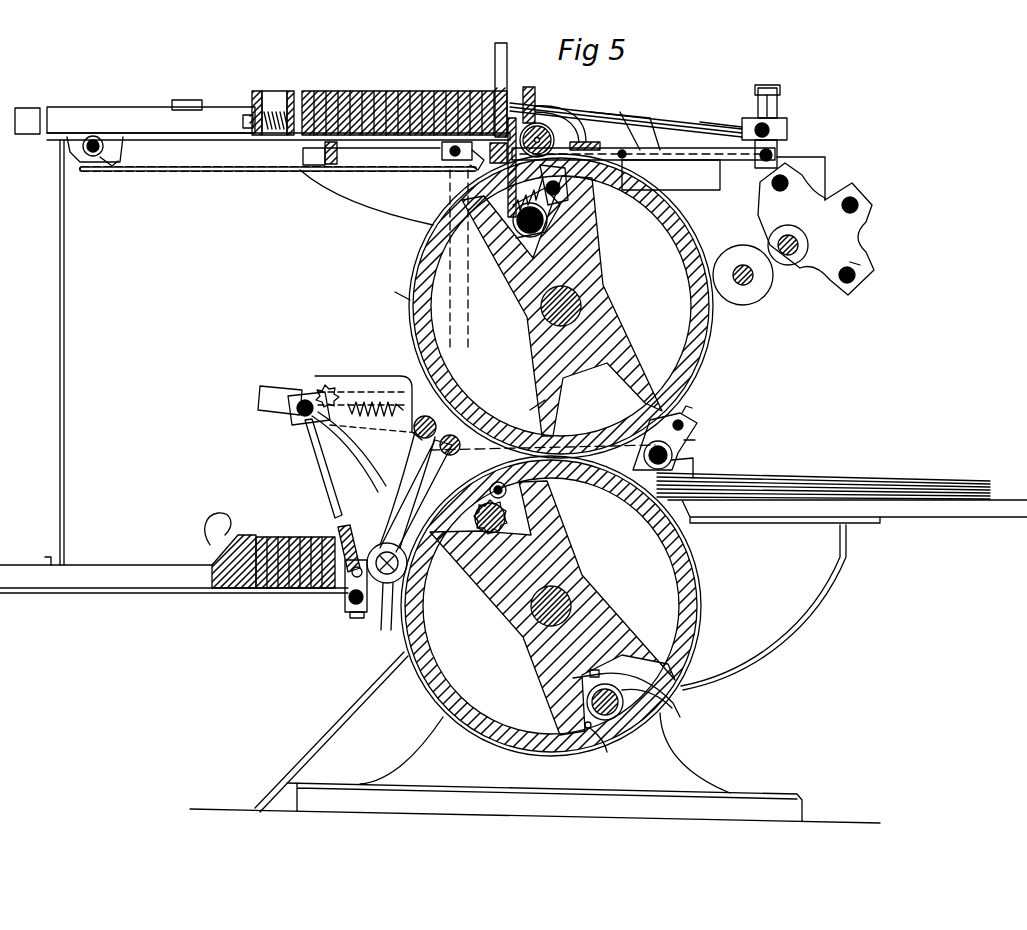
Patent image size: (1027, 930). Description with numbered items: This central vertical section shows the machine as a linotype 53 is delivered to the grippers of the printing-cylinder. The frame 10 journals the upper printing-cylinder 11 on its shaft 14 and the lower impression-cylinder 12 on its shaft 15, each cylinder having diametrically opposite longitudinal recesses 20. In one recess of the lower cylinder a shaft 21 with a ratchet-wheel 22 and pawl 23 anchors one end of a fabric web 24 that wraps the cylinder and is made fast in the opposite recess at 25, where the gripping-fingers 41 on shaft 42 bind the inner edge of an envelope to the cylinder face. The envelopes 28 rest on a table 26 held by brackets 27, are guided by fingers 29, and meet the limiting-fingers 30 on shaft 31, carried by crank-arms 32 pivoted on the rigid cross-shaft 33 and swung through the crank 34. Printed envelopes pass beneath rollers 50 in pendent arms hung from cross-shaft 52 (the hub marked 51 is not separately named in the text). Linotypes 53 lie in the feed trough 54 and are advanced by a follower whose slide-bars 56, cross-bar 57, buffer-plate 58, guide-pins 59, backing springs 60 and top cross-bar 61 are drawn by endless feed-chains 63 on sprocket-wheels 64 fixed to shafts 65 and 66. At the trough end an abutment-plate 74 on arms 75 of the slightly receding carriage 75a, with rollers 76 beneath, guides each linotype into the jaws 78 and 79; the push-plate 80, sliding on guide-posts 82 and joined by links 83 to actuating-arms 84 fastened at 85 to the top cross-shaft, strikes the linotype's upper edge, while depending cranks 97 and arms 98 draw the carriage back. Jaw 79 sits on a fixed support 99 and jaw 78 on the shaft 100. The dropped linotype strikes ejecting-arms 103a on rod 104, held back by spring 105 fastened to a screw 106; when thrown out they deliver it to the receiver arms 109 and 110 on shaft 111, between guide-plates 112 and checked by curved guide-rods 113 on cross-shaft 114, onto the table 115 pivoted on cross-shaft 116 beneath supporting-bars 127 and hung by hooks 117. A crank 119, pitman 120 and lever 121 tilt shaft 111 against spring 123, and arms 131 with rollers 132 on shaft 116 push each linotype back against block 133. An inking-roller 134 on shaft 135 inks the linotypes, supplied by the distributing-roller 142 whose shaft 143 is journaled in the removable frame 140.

The frame 10 is at (682, 745).
The printing-cylinder 11 is at (558, 455).
The impression-cylinder 12 is at (557, 456).
The shaft 14 is at (605, 300).
The shaft 15 is at (580, 576).
The longitudinal recesses 20 is at (595, 236).
The shaft 21 is at (470, 573).
The ratchet-wheel 22 is at (476, 512).
The pawl 23 is at (495, 482).
The web 24 is at (430, 500).
The web fastening 25 is at (606, 752).
The table 26 is at (935, 517).
The brackets 27 is at (806, 618).
The envelopes or other material 28 is at (823, 476).
The fingers 29 is at (660, 497).
The limiting-fingers 30 is at (672, 455).
The shaft 31 is at (684, 426).
The crank-arms 32 is at (700, 440).
The cross-shaft 33 is at (695, 468).
The crank 34 is at (690, 408).
The gripping-fingers 41 is at (648, 680).
The shaft 42 is at (612, 718).
The rollers 50 is at (381, 609).
The hub 51 is at (400, 545).
The cross-shaft 52 is at (524, 404).
The linotypes 53 is at (365, 92).
The feed trough or table 54 is at (147, 110).
The slide-bars 56 is at (184, 120).
The cross-bar 57 is at (258, 91).
The buffer-plate 58 is at (297, 92).
The guide-pins 59 is at (245, 118).
The springs 60 is at (277, 112).
The top cross-bar 61 is at (185, 101).
The feed-chains 63 is at (172, 171).
The sprocket-wheels 64 is at (108, 162).
The shaft 65 is at (92, 160).
The shaft 66 is at (450, 162).
The abutment-plate 74 is at (540, 106).
The arms 75 is at (596, 112).
The carriage 75a is at (654, 118).
The rollers 76 is at (628, 113).
The printing-jaw 78 is at (465, 260).
The printing-jaw 79 is at (612, 152).
The push-plate 80 is at (529, 88).
The guide-posts 82 is at (495, 64).
The links 83 is at (497, 143).
The actuating-arms 84 is at (722, 124).
The fastening 85 is at (785, 118).
The depending cranks 97 is at (800, 157).
The arms 98 is at (760, 164).
The fixed support 99 is at (520, 250).
The shaft 100 is at (512, 240).
The ejecting-arms 103a is at (570, 198).
The cross shaft or rod 104 is at (562, 192).
The spiral spring 105 is at (505, 190).
The screw 106 is at (671, 173).
The arms 109 is at (320, 466).
The arms 110 is at (335, 448).
The shaft 111 is at (303, 398).
The guide-plates 112 is at (386, 400).
The guide-rods 113 is at (400, 480).
The cross-shaft 114 is at (422, 416).
The table 115 is at (147, 575).
The cross-shaft 116 is at (352, 575).
The hooks 117 is at (65, 455).
The crank 119 is at (326, 385).
The pitman 120 is at (360, 378).
The lever 121 is at (408, 296).
The spring 123 is at (375, 428).
The supporting-bars 127 is at (270, 392).
The arms 131 is at (352, 604).
The rollers 132 is at (350, 574).
The block 133 is at (222, 513).
The inking-roller 134 is at (770, 292).
The shaft 135 is at (746, 286).
The frame 140 is at (860, 242).
The distributing-roller 142 is at (866, 263).
The shaft 143 is at (795, 238).